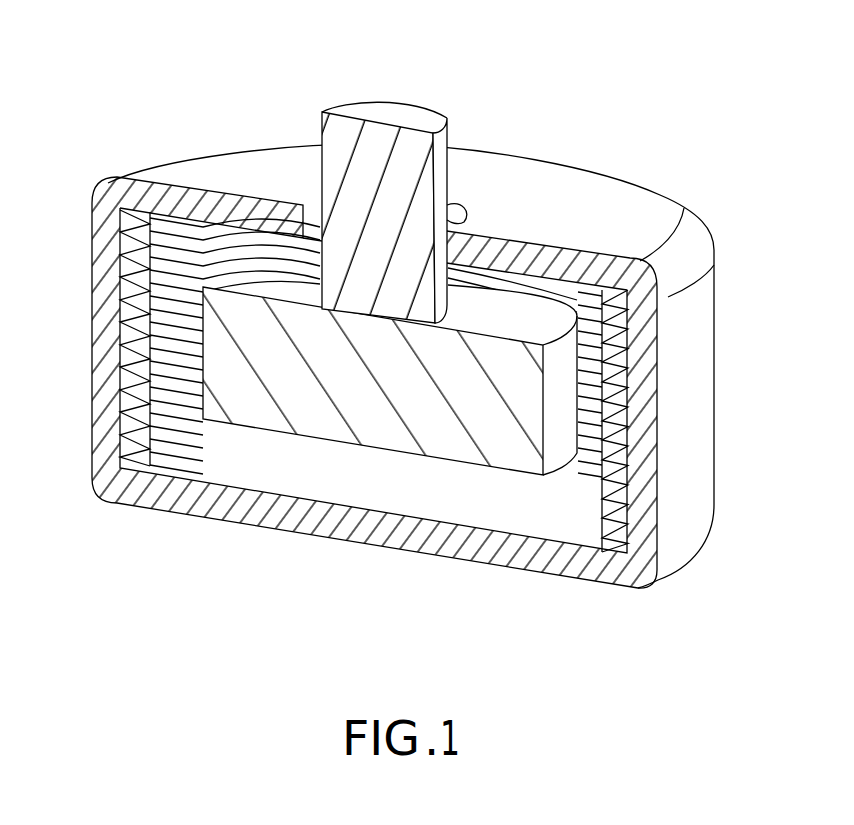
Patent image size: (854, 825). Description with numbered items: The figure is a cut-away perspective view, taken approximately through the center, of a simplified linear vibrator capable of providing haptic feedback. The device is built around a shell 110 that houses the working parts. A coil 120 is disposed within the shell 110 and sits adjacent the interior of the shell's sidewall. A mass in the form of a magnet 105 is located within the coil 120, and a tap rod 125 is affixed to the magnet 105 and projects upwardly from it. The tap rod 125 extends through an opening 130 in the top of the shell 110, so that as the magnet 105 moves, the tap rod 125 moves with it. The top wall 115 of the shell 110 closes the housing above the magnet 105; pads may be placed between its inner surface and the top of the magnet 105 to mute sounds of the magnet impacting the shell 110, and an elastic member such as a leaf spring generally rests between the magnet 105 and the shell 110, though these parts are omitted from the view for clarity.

The magnet 105 is at (385, 435).
The shell 110 is at (636, 196).
The top wall 115 is at (212, 228).
The coil 120 is at (152, 408).
The tap rod 125 is at (422, 140).
The opening 130 is at (458, 208).